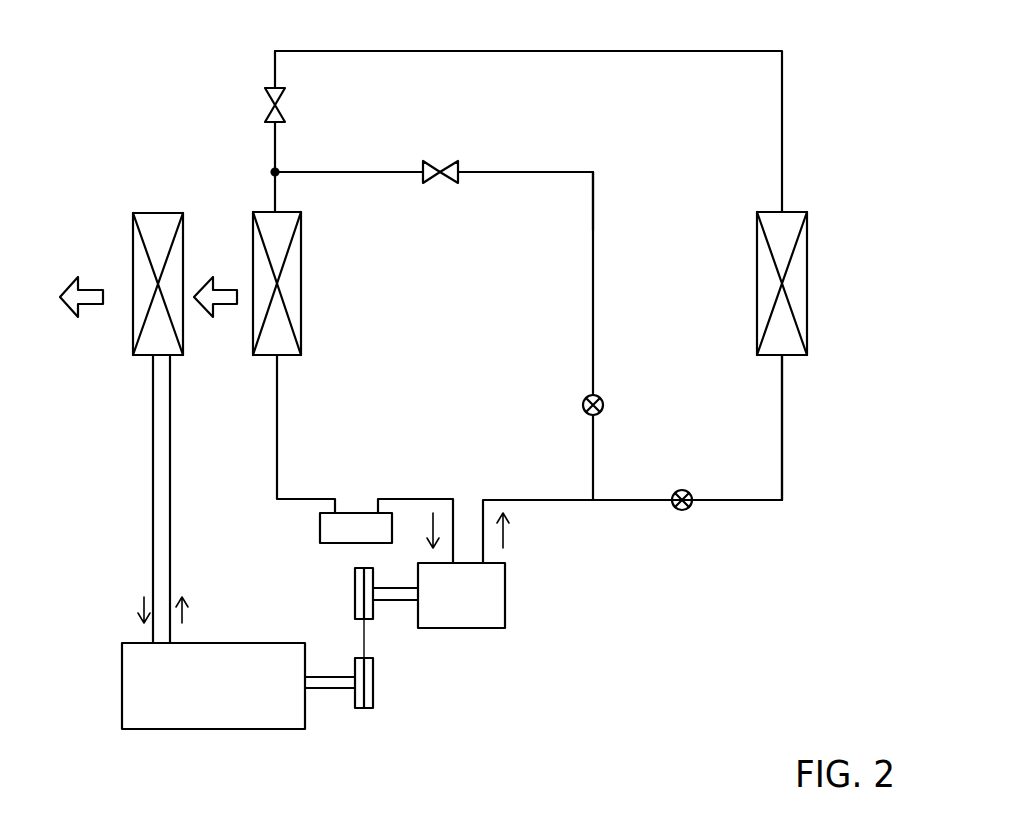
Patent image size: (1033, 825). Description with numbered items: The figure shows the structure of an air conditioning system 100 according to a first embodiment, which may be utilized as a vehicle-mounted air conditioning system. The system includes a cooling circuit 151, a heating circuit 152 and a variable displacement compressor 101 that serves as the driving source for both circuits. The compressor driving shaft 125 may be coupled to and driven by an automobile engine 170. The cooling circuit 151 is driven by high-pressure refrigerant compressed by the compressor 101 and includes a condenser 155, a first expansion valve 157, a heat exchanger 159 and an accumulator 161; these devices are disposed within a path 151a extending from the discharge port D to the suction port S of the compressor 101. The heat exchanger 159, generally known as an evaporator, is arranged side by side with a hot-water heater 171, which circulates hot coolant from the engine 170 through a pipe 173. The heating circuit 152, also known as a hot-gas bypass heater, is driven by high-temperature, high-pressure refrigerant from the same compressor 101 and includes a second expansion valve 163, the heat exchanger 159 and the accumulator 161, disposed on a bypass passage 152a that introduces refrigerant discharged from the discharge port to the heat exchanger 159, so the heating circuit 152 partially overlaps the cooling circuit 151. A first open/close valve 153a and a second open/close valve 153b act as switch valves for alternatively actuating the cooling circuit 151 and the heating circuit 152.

The air conditioning system 100 is at (731, 614).
The variable displacement compressor 101 is at (506, 606).
The compressor driving shaft 125 is at (393, 602).
The cooling circuit 151 is at (783, 412).
The path 151a is at (783, 458).
The heating circuit 152 is at (596, 290).
The bypass passage 152a is at (595, 222).
The first open/close valve 153a is at (686, 510).
The second open/close valve 153b is at (604, 404).
The condenser 155 is at (808, 257).
The first expansion valve 157 is at (270, 97).
The heat exchanger 159 is at (302, 258).
The accumulator 161 is at (357, 525).
The second expansion valve 163 is at (457, 163).
The automobile engine 170 is at (132, 702).
The hot-water heater 171 is at (160, 210).
The pipe 173 is at (152, 480).